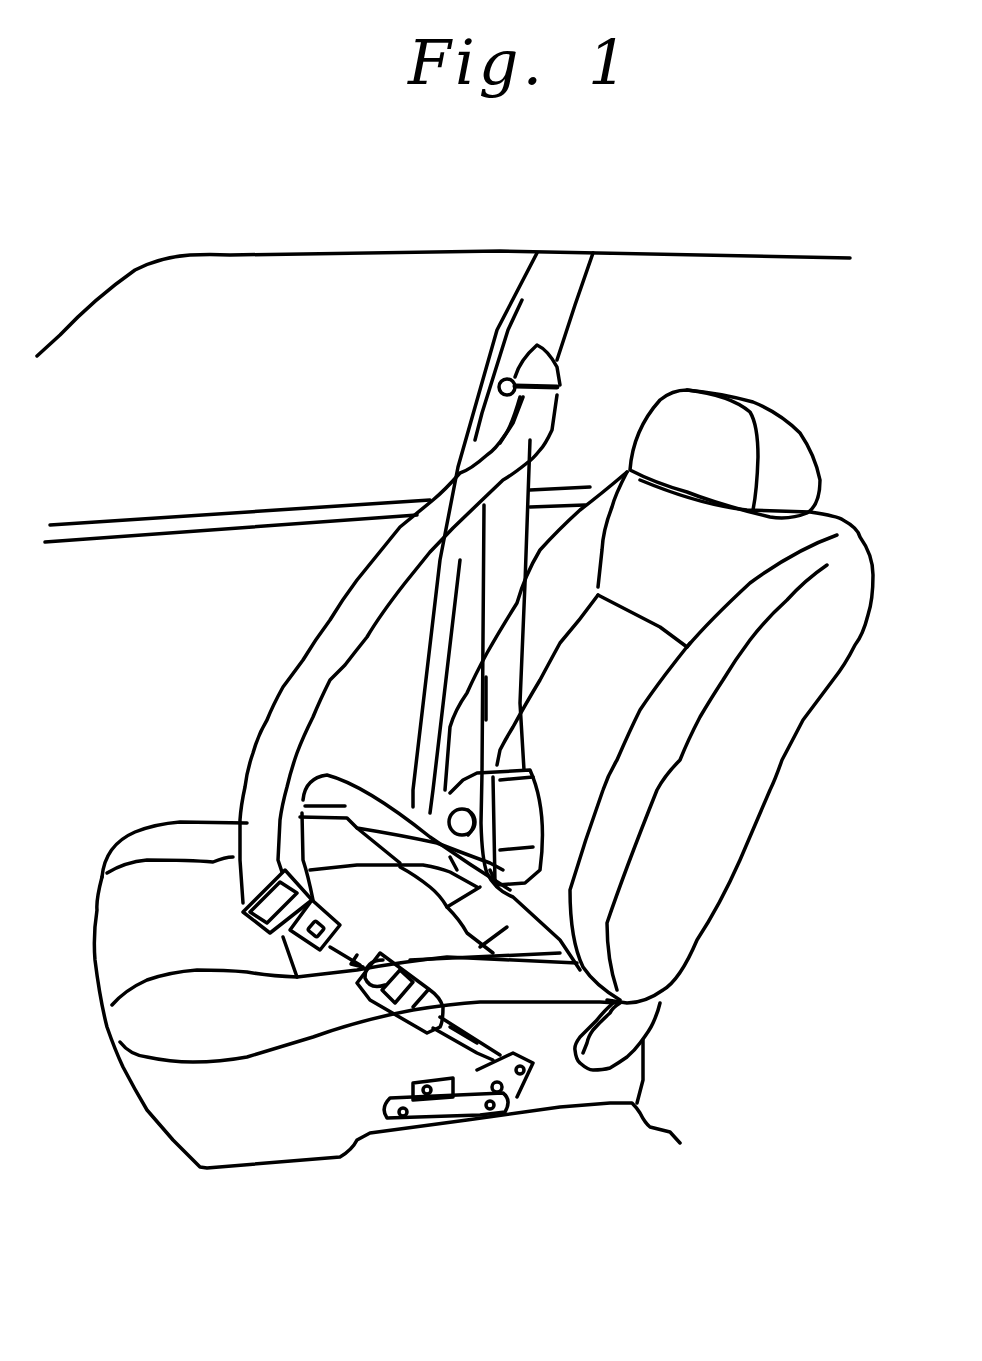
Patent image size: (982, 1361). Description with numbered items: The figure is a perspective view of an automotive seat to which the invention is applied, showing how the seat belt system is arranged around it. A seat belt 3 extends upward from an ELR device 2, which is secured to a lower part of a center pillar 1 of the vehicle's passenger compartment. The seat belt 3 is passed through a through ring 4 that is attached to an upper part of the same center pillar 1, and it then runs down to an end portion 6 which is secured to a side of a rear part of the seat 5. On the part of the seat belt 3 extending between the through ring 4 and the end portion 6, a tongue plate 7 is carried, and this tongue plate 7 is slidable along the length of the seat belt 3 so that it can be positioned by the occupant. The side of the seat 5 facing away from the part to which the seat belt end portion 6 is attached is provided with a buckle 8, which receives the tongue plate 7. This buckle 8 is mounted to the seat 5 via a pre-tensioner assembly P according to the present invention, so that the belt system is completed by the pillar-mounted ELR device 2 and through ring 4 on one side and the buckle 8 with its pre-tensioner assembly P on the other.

The center pillar 1 is at (462, 616).
The ELR device 2 is at (533, 817).
The seat belt 3 is at (525, 480).
The through ring 4 is at (560, 383).
The seat 5 is at (205, 830).
The end portion 6 is at (467, 922).
The tongue plate 7 is at (267, 935).
The buckle 8 is at (403, 1010).
The pre-tensioner assembly P is at (500, 1123).